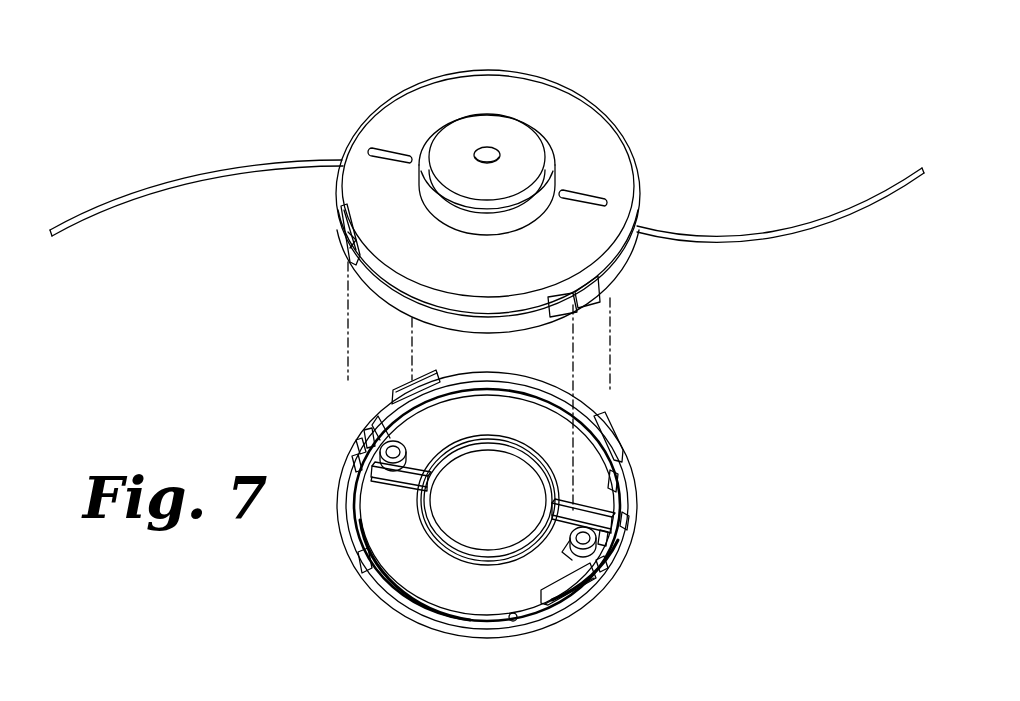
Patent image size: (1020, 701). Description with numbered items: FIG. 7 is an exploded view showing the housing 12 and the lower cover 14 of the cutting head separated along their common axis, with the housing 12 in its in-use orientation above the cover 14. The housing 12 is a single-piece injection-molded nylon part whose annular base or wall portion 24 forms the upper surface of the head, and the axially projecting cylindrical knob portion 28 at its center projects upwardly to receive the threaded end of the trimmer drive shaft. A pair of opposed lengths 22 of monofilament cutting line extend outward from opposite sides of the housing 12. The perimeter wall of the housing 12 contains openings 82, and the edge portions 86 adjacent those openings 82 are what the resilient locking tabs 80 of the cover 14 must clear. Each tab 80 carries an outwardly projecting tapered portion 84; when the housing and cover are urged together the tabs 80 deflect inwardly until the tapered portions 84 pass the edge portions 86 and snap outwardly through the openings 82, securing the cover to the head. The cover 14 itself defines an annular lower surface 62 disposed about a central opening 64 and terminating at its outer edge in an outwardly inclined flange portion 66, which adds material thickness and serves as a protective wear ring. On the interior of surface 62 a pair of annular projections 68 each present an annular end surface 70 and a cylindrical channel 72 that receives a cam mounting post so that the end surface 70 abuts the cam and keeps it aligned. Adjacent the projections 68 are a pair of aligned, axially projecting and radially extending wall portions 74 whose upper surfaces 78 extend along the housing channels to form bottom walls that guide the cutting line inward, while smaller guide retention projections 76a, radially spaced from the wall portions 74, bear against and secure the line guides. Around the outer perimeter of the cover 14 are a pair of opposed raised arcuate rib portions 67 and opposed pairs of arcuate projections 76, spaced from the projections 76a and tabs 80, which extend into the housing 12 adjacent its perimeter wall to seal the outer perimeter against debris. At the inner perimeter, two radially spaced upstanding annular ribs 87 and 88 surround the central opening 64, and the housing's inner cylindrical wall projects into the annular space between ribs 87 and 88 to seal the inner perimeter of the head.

The housing 12 is at (634, 155).
The cover 14 is at (641, 485).
The lengths of cutting line 22 is at (132, 200).
The annular base or wall portion 24 is at (578, 105).
The knob portion 28 is at (490, 117).
The annular lower surface 62 is at (562, 396).
The central opening 64 is at (474, 511).
The inclined flange portion 66 is at (452, 630).
The raised arcuate rib portions 67 is at (557, 398).
The annular projections 68 is at (405, 441).
The annular end surface 70 is at (372, 447).
The cylindrical channel 72 is at (393, 442).
The wall portions 74 is at (408, 486).
The arcuate projections 76 is at (378, 405).
The guide retention projections 76a is at (357, 445).
The upper surfaces 78 is at (413, 483).
The resilient locking tabs 80 is at (425, 390).
The openings 82 is at (348, 250).
The tapered portion 84 is at (355, 548).
The edge portions 86 is at (346, 232).
The inner annular rib 87 is at (475, 450).
The inner annular rib 88 is at (518, 450).